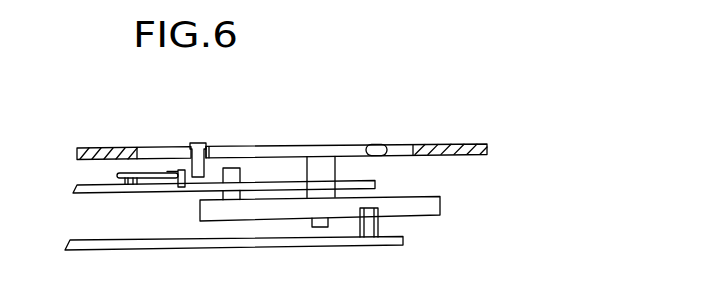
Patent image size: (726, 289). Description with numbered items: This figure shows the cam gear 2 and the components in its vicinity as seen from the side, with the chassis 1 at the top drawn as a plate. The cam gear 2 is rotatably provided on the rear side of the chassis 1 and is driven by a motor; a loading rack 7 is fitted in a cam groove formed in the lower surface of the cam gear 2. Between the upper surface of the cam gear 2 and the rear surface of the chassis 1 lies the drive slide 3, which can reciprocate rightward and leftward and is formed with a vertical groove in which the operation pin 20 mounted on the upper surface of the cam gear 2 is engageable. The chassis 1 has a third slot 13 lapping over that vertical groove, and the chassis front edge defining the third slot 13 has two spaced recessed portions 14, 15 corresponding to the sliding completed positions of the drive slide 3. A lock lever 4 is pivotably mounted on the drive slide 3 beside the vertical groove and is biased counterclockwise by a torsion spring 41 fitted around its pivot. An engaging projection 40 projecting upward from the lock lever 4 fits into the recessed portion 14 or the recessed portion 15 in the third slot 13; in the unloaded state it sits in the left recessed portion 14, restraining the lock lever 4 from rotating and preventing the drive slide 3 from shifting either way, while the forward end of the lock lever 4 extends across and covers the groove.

The chassis 1 is at (460, 148).
The cam gear 2 is at (248, 208).
The drive slide 3 is at (97, 193).
The lock lever 4 is at (148, 173).
The loading rack 7 is at (327, 245).
The third slot 13 is at (407, 144).
The recessed portion 14 is at (208, 153).
The recessed portion 15 is at (370, 146).
The operation pin 20 is at (232, 167).
The engaging projection 40 is at (197, 143).
The torsion spring 41 is at (120, 173).